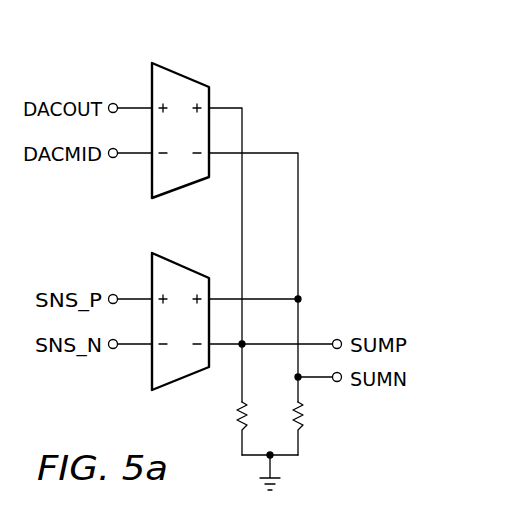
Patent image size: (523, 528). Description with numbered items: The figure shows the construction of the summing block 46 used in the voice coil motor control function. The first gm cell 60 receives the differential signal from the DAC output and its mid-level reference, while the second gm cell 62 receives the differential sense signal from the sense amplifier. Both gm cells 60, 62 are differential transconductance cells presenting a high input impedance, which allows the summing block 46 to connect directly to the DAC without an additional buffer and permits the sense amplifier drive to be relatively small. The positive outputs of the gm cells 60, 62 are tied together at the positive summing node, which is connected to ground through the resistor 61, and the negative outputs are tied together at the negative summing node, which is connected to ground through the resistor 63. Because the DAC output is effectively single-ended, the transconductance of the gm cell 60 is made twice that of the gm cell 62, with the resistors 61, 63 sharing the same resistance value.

The summing block 46 is at (279, 77).
The gm cell 60 is at (180, 72).
The resistor 61 is at (237, 412).
The gm cell 62 is at (180, 262).
The resistor 63 is at (302, 420).